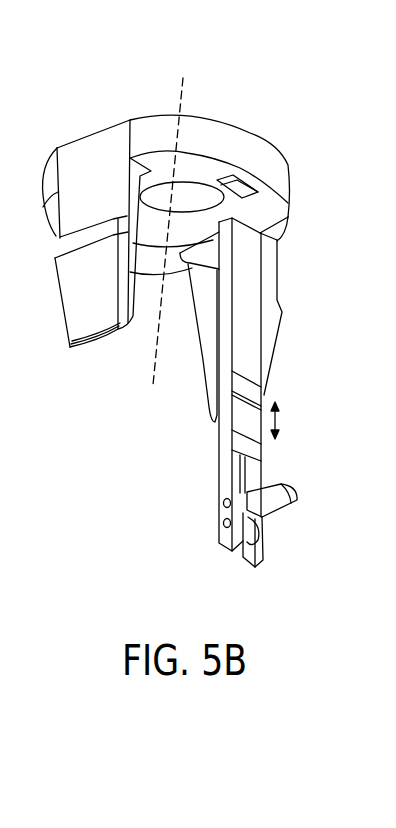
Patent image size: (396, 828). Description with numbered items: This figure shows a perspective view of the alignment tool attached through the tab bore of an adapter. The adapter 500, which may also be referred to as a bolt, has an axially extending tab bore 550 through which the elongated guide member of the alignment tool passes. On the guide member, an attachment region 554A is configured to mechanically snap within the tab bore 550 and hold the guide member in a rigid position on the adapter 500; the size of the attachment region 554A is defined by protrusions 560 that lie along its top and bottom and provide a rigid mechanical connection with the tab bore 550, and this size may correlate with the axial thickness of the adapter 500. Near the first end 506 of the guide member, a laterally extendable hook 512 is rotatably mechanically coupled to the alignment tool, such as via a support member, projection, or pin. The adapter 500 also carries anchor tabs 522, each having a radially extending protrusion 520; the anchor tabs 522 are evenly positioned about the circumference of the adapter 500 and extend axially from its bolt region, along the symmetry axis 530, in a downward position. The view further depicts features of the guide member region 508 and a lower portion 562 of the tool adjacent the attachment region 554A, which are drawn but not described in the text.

The adapter 500 is at (243, 142).
The first end 506 is at (257, 565).
The strut arm 508 is at (288, 220).
The laterally extendable hook 512 is at (282, 495).
The radial protrusion 520 is at (85, 312).
The anchor tab 522 is at (88, 153).
The symmetry axis 530 is at (153, 385).
The axially extending tab bore 550 is at (248, 190).
The attachment region 554A is at (280, 422).
The protrusion 560 is at (255, 393).
The lower stop 562 is at (243, 467).